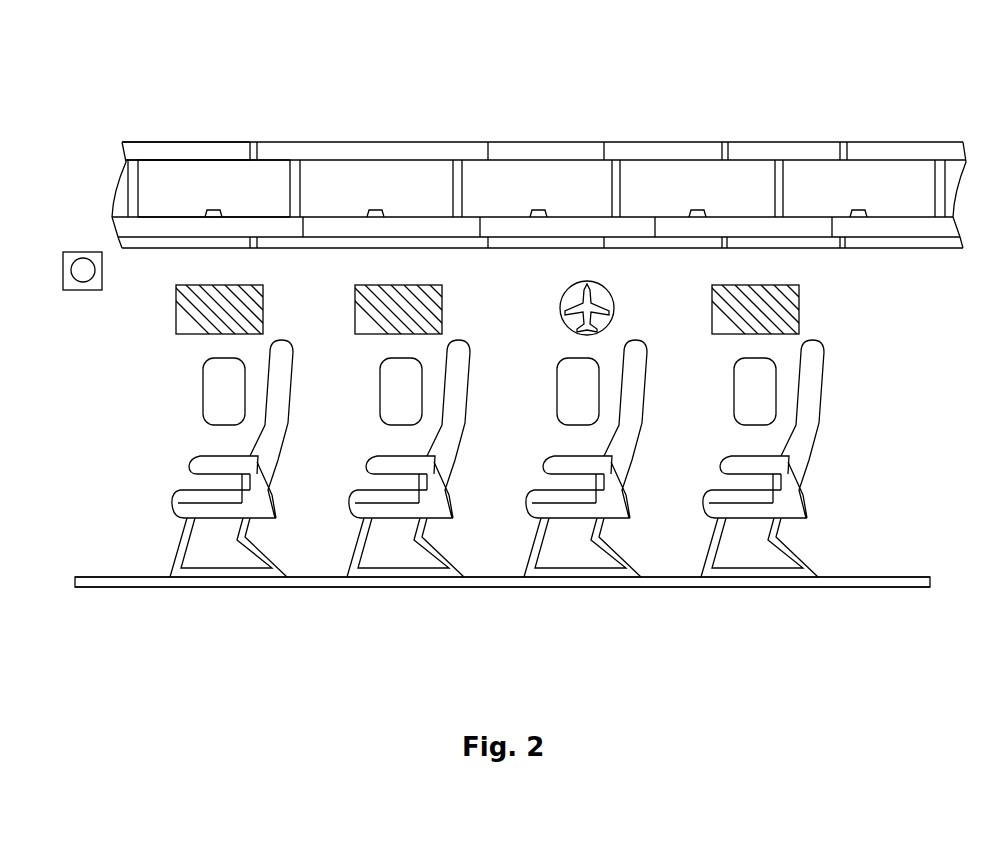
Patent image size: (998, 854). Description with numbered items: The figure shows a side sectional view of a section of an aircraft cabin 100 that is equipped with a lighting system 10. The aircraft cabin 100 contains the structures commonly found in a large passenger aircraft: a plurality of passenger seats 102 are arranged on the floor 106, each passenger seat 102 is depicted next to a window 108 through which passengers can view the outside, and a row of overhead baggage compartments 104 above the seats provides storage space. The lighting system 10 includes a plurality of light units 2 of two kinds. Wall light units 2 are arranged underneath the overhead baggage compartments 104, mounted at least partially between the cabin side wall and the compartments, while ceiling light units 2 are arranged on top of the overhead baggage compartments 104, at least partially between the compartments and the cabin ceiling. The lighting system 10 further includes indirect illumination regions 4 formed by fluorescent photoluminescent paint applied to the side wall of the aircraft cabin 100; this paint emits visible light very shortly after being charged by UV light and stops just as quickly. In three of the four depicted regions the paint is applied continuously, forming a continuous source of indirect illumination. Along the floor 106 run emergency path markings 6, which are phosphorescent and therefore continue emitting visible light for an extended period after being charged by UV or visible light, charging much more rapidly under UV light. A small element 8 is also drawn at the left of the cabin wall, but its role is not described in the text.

The light unit 2 is at (187, 152).
The indirect illumination region 4 is at (263, 318).
The emergency path marking 6 is at (102, 587).
The sensor 8 is at (83, 290).
The lighting system 10 is at (883, 330).
The aircraft cabin 100 is at (117, 458).
The passenger seat 102 is at (277, 428).
The overhead baggage compartment 104 is at (230, 182).
The floor 106 is at (888, 577).
The window 108 is at (206, 384).